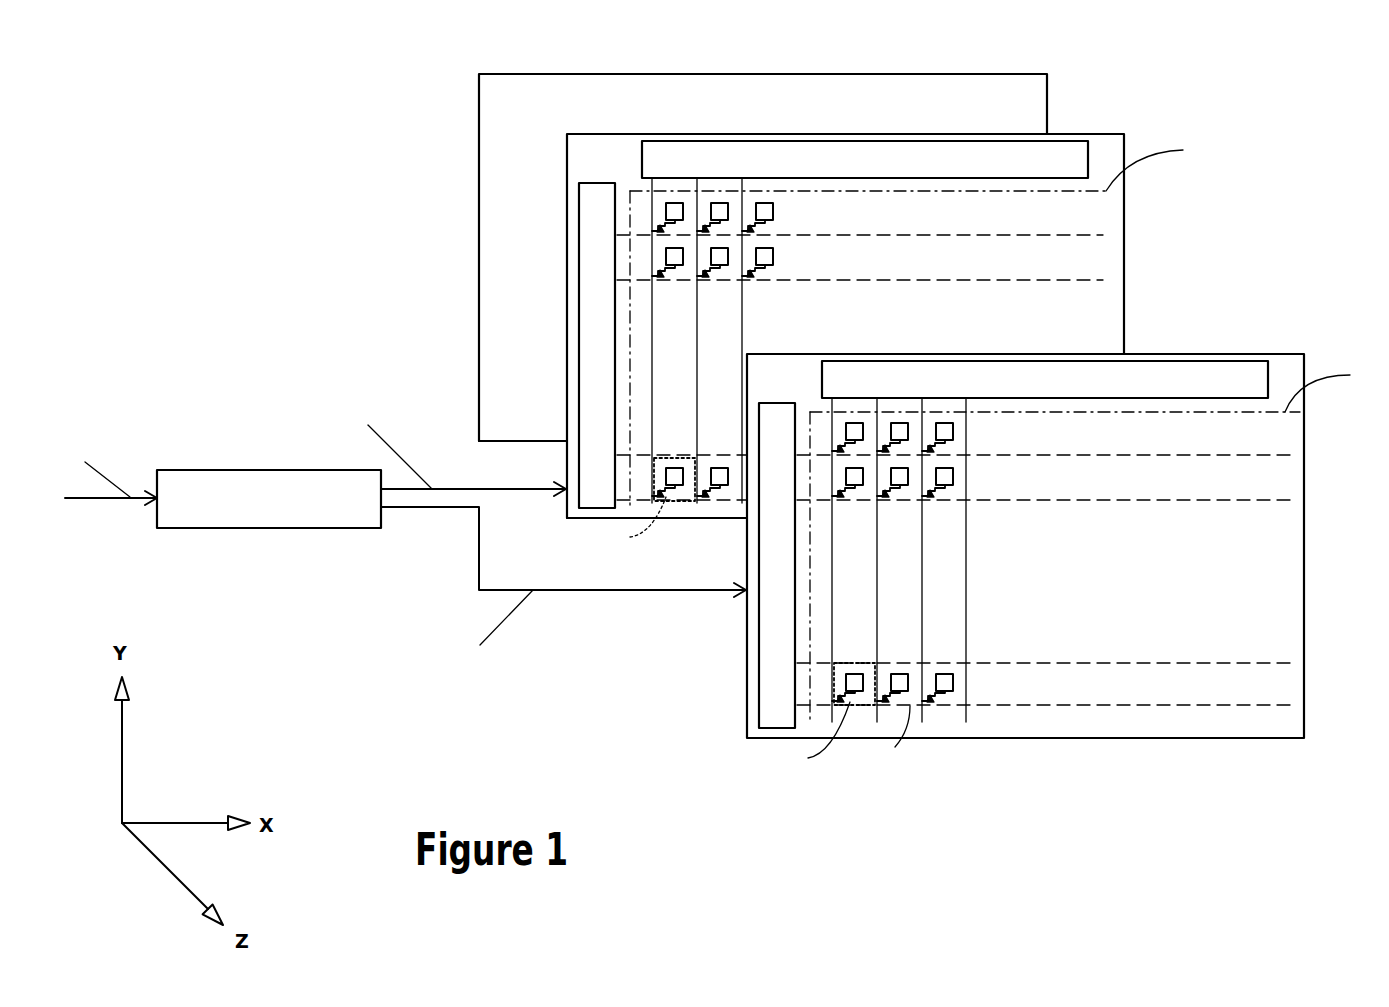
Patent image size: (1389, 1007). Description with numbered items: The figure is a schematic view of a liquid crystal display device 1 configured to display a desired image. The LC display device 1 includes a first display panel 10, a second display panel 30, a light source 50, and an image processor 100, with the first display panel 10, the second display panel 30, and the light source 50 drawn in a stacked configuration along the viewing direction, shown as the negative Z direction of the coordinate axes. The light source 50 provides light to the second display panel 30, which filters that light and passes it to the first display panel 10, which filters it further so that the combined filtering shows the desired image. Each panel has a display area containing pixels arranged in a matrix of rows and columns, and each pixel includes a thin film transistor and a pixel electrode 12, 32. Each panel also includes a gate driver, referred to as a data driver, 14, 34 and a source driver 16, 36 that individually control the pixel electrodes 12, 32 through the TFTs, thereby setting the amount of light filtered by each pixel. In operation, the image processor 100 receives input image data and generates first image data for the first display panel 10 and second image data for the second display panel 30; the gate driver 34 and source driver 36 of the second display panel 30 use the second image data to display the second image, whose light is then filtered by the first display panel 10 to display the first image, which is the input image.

The LC display device 1 is at (298, 124).
The first display panel 10 is at (1021, 528).
The pixel electrode 12 is at (947, 702).
The gate driver 14 is at (755, 740).
The source driver 16 is at (1203, 361).
The second display panel 30 is at (878, 306).
The pixel electrode 32 is at (721, 493).
The gate driver 34 is at (591, 509).
The source driver 36 is at (1066, 141).
The light source 50 is at (792, 74).
The image processor 100 is at (278, 470).